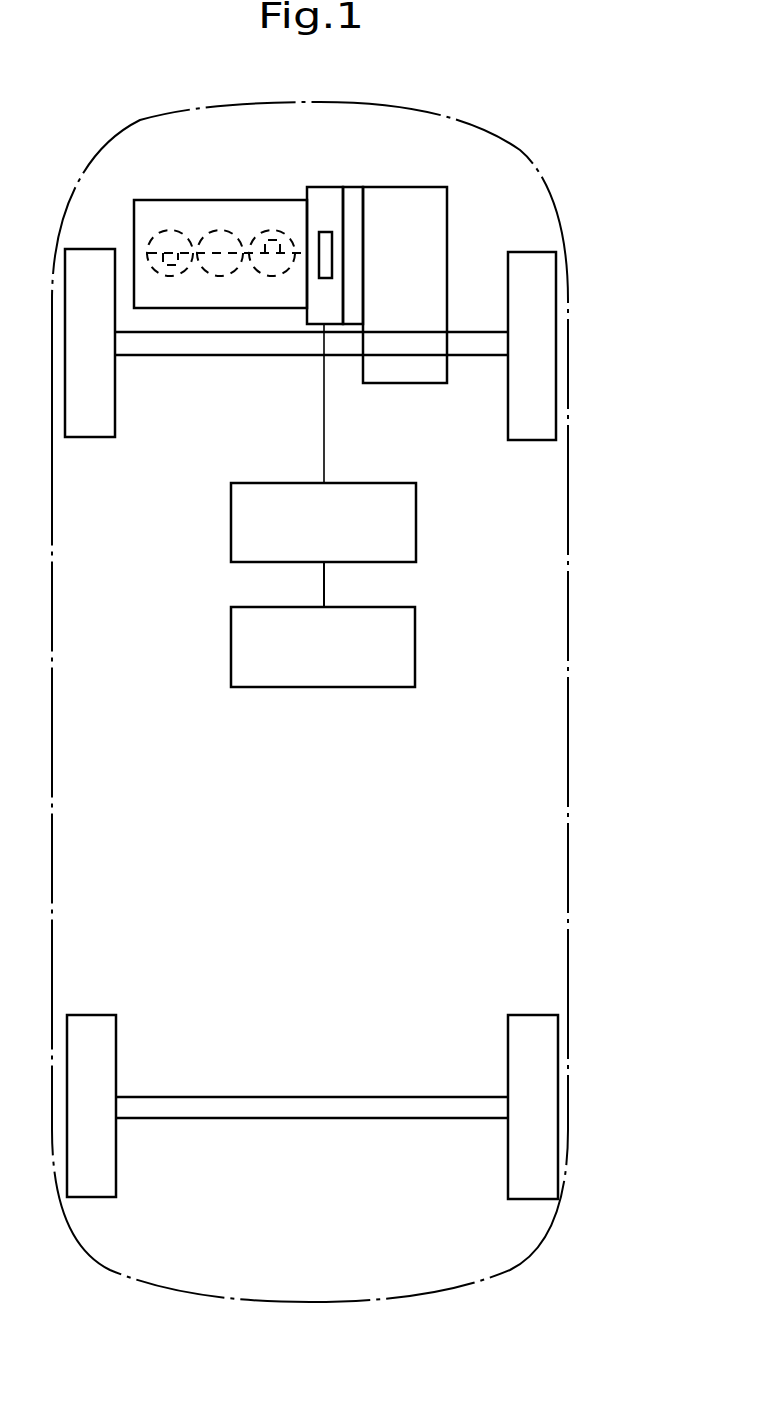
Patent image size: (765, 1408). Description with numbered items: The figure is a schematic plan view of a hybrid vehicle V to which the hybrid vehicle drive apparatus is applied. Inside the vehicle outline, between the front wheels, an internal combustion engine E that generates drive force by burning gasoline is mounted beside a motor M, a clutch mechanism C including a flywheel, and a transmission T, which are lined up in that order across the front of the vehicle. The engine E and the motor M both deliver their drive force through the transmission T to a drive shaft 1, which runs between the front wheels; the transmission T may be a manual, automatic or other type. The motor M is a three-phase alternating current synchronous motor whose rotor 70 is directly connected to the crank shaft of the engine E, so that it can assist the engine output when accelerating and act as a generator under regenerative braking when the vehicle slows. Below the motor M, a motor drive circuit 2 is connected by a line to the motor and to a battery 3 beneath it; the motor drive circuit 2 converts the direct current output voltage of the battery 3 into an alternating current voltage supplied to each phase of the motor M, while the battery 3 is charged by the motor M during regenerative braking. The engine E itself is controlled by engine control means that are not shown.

The hybrid vehicle V is at (560, 190).
The internal combustion engine E is at (211, 216).
The motor M is at (322, 206).
The clutch mechanism C is at (357, 206).
The transmission T is at (412, 206).
The drive shaft 1 is at (160, 346).
The rotor 70 is at (319, 277).
The motor drive circuit 2 is at (416, 527).
The battery 3 is at (415, 643).